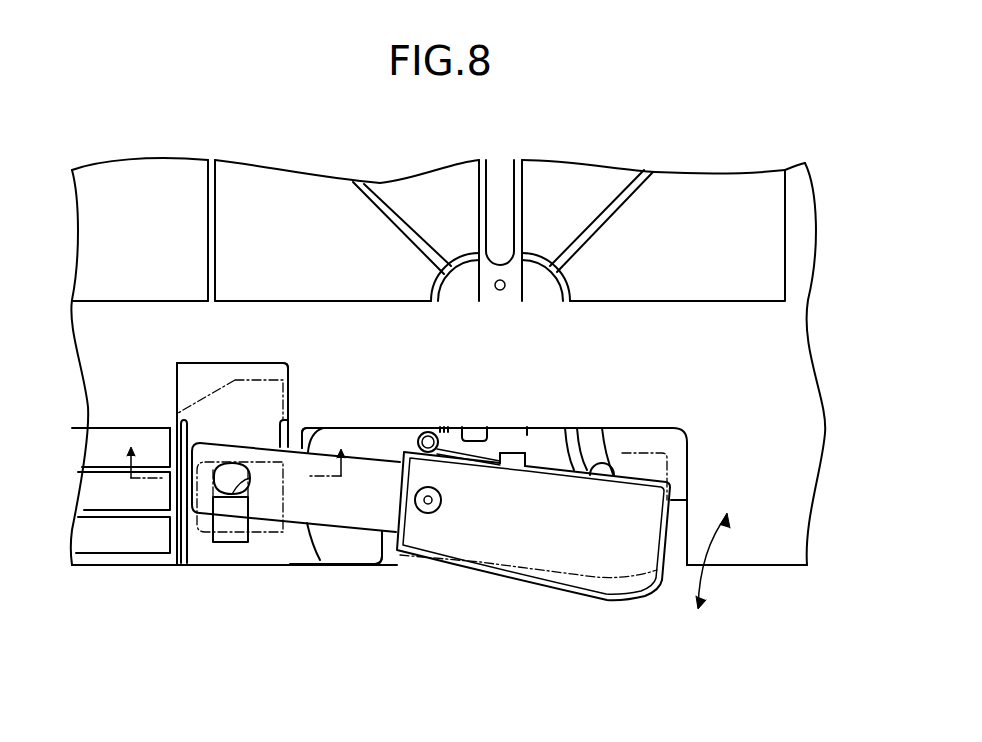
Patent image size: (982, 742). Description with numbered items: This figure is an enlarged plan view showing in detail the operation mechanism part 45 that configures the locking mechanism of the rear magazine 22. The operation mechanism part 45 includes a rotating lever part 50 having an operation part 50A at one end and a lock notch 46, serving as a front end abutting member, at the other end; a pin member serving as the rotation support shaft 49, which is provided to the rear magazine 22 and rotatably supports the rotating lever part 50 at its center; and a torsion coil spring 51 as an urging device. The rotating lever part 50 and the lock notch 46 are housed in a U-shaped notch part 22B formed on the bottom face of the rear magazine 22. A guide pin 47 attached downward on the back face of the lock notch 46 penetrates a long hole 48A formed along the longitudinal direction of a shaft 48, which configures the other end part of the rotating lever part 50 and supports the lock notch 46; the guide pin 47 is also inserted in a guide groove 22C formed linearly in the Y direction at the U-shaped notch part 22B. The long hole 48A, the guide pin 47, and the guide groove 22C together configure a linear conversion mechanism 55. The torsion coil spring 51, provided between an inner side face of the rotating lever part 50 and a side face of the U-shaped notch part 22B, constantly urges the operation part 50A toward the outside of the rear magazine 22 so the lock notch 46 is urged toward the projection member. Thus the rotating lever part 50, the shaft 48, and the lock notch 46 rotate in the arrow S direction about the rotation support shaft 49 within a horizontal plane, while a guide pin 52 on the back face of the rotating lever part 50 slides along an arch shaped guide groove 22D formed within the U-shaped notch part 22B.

The rear magazine 22 is at (793, 382).
The U-shaped notch part 22B is at (688, 533).
The guide groove 22C is at (223, 540).
The arch shaped guide groove 22D is at (588, 440).
The operation mechanism part 45 is at (600, 660).
The lock notch 46 is at (200, 393).
The guide pin 47 is at (220, 465).
The shaft 48 is at (330, 515).
The long hole 48A is at (249, 496).
The rotation support shaft 49 is at (428, 513).
The rotating lever part 50 is at (580, 598).
The operation part 50A is at (530, 553).
The torsion coil spring 51 is at (423, 434).
The guide pin 52 is at (605, 462).
The linear conversion mechanism 55 is at (246, 446).
The arrow S direction S is at (728, 577).